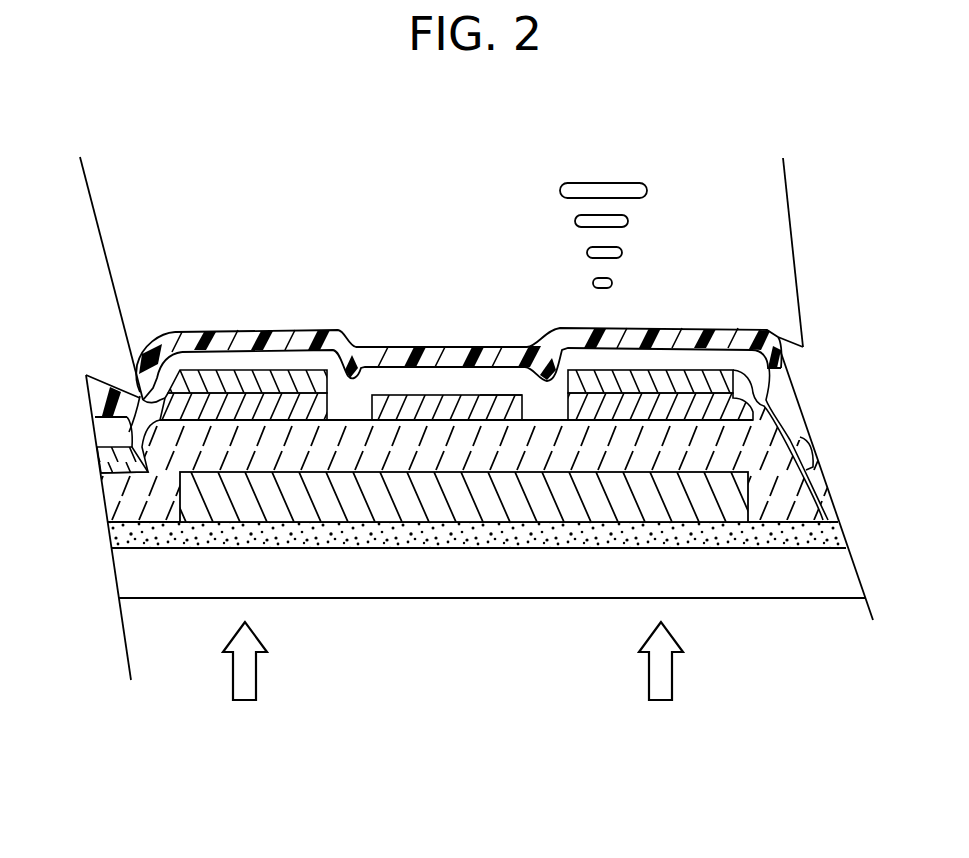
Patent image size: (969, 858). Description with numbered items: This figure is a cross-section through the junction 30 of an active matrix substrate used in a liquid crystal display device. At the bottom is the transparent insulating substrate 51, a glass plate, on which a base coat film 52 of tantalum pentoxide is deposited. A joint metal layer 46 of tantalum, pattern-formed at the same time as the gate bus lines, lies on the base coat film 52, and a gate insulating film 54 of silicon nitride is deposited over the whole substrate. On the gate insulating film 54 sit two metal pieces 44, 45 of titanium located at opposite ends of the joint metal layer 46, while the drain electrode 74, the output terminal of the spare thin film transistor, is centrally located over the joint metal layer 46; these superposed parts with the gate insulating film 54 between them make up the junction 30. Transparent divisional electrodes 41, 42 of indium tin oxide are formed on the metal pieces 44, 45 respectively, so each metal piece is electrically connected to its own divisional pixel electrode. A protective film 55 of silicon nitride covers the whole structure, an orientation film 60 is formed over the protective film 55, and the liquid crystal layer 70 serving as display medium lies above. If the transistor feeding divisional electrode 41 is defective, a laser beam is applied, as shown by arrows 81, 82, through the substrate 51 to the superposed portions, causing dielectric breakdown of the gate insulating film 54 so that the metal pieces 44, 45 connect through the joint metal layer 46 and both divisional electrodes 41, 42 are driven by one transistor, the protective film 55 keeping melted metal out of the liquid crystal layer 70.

The junction 30 is at (463, 296).
The divisional electrode 41 is at (765, 400).
The divisional electrode 42 is at (218, 385).
The metal piece 44 is at (720, 370).
The metal piece 45 is at (298, 385).
The joint metal layer 46 is at (380, 512).
The transparent insulating substrate 51 is at (476, 576).
The base coat film 52 is at (747, 524).
The gate insulating film 54 is at (113, 497).
The protective film 55 is at (424, 394).
The orientation film 60 is at (657, 328).
The liquid crystal layer 70 is at (604, 184).
The drain electrode 74 is at (481, 394).
The arrow 81 is at (258, 680).
The arrow 82 is at (670, 680).